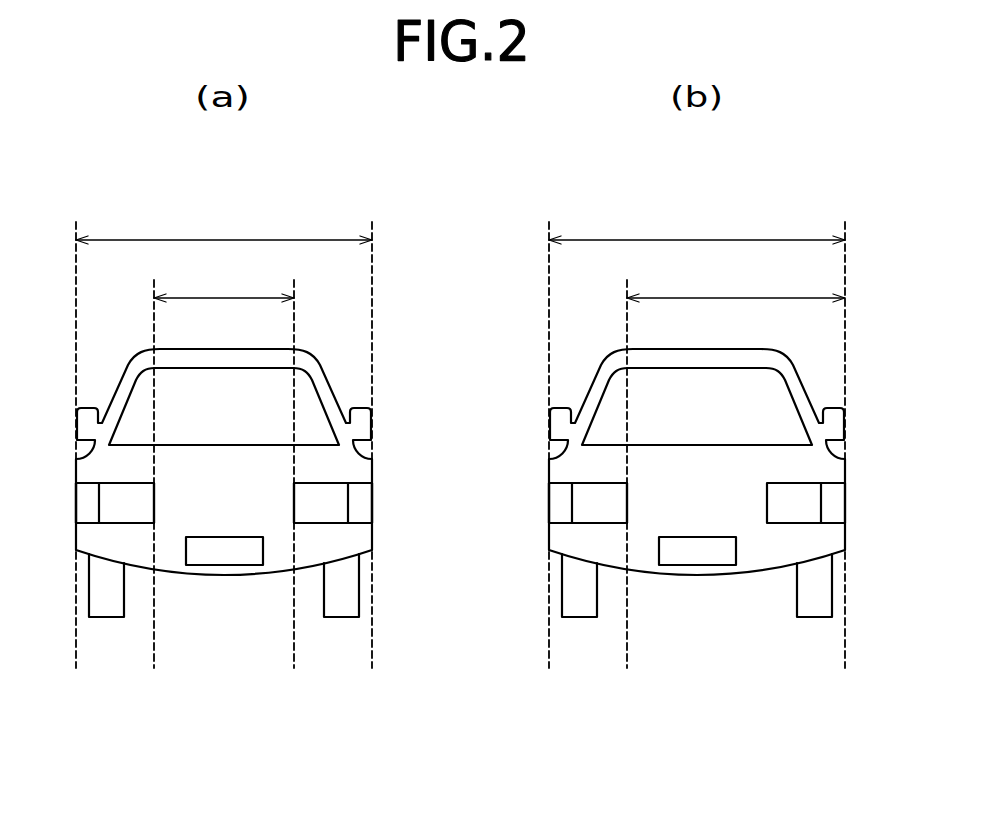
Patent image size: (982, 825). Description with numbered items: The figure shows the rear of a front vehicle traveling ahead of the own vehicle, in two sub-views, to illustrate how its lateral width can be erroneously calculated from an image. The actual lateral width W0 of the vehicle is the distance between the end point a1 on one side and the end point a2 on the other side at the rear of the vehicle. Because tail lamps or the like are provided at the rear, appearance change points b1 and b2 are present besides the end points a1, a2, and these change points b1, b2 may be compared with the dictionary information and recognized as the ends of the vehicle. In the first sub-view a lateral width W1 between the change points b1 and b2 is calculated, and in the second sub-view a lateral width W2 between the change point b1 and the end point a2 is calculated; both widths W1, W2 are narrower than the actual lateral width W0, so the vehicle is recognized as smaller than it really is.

The end point a1 is at (76, 506).
The end point a2 is at (373, 506).
The appearance change point b1 is at (155, 502).
The appearance change point b2 is at (293, 502).
The actual lateral width W0 is at (460, 225).
The lateral width W1 is at (224, 283).
The lateral width W2 is at (736, 283).